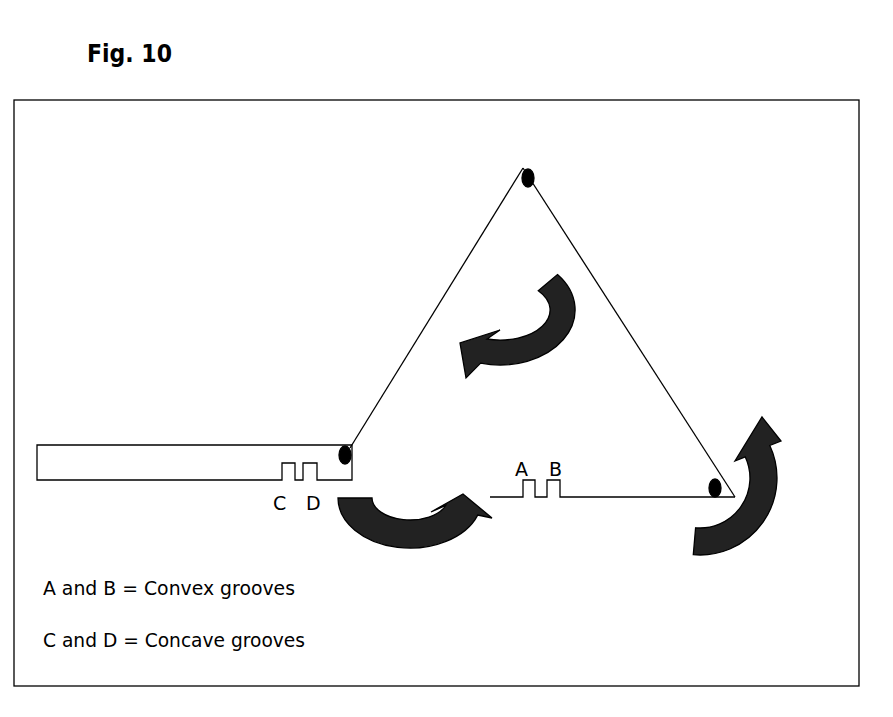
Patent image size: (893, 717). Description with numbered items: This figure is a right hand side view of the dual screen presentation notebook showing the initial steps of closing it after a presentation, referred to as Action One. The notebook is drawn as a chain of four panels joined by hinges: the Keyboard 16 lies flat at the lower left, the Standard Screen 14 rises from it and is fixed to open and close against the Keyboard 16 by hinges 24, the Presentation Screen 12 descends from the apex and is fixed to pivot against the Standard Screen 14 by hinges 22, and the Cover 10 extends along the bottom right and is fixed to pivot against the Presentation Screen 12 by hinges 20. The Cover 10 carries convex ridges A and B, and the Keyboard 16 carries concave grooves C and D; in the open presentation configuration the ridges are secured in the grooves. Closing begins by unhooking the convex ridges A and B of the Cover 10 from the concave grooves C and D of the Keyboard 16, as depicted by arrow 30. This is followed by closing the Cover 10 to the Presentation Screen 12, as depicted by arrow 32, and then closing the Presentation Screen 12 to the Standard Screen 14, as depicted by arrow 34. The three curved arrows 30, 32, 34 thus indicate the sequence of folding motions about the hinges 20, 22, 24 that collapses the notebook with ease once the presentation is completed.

The Cover 10 is at (612, 485).
The Presentation Screen 12 is at (745, 262).
The Standard Screen 14 is at (432, 303).
The Keyboard 16 is at (194, 462).
The hinges 20 is at (710, 500).
The hinges 22 is at (540, 166).
The hinges 24 is at (338, 444).
The arrow 30 is at (438, 538).
The arrow 32 is at (748, 462).
The arrow 34 is at (505, 351).